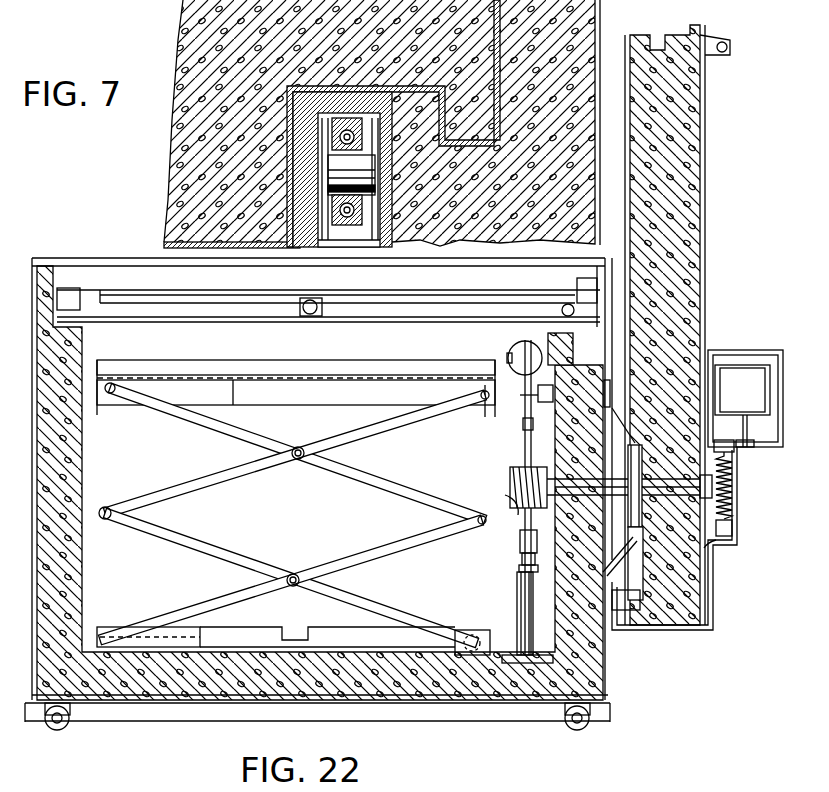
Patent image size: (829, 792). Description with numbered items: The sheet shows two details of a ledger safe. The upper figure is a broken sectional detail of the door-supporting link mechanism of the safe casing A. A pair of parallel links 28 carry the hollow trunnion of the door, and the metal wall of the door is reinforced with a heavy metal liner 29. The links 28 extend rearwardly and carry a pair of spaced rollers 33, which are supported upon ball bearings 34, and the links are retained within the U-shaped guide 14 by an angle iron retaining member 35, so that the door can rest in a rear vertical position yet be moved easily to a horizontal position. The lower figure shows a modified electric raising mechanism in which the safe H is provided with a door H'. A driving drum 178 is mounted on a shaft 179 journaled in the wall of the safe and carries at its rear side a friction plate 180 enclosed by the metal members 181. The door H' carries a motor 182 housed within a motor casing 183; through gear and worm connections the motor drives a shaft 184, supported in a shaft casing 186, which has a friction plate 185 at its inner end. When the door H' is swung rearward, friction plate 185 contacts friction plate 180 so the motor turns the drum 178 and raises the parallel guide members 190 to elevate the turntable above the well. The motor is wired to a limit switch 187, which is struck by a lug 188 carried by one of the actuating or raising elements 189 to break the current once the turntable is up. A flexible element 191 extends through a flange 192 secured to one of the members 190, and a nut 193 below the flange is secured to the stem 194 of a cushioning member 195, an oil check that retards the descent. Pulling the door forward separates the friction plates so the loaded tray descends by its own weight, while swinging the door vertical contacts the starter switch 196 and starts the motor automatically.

In FIG. 7, the U-shaped guide 14 is at (382, 123).
In FIG. 7, the parallel links 28 is at (365, 128).
In FIG. 7, the metal liner 29 is at (300, 140).
In FIG. 7, the rollers 33 is at (347, 128).
In FIG. 7, the ball bearings 34 is at (337, 209).
In FIG. 7, the angle iron retaining member 35 is at (290, 242).
In FIG. 7, the safe casing A is at (458, 252).
In FIG. 22, the safe H is at (338, 494).
In FIG. 22, the door H' is at (687, 325).
In FIG. 22, the driving drum 178 is at (512, 476).
In FIG. 22, the shaft 179 is at (620, 548).
In FIG. 22, the friction plate 180 is at (637, 468).
In FIG. 22, the metal members 181 is at (612, 410).
In FIG. 22, the motor 182 is at (752, 392).
In FIG. 22, the motor casing 183 is at (736, 486).
In FIG. 22, the shaft 184 is at (733, 522).
In FIG. 22, the friction plate 185 is at (734, 455).
In FIG. 22, the shaft casing 186 is at (708, 546).
In FIG. 22, the limit switch 187 is at (555, 380).
In FIG. 22, the lug 188 is at (531, 425).
In FIG. 22, the actuating or raising elements 189 is at (528, 448).
In FIG. 22, the parallel guide members 190 is at (392, 555).
In FIG. 22, the flexible element 191 is at (505, 495).
In FIG. 22, the flange 192 is at (520, 540).
In FIG. 22, the nut 193 is at (522, 557).
In FIG. 22, the stem 194 is at (520, 570).
In FIG. 22, the cushioning member 195 is at (517, 625).
In FIG. 22, the starter switch 196 is at (648, 622).